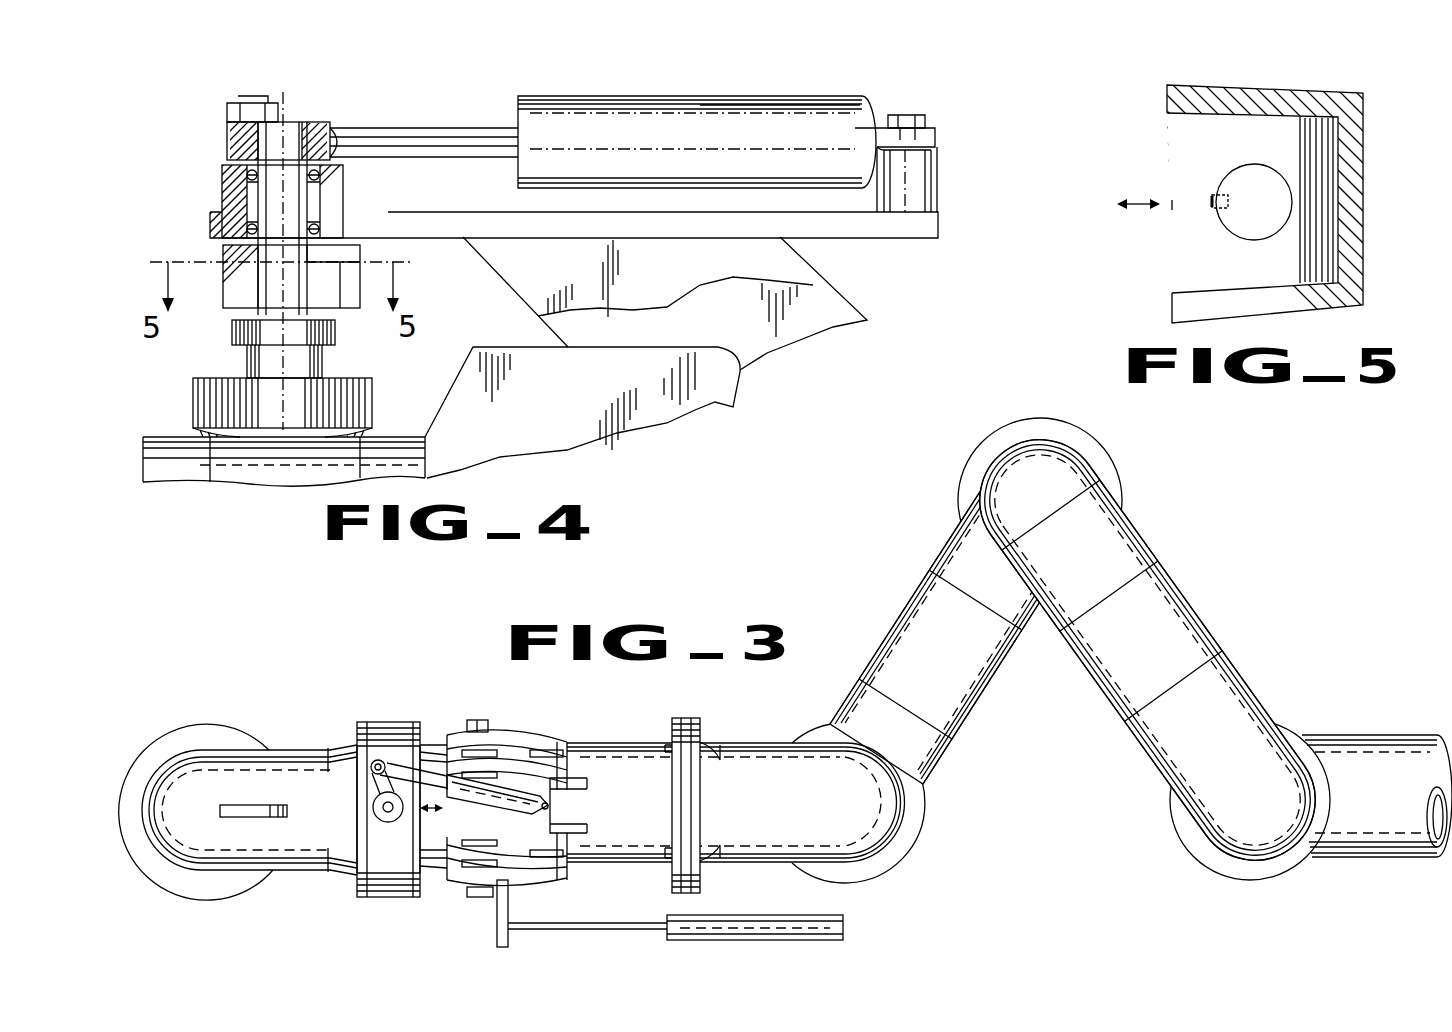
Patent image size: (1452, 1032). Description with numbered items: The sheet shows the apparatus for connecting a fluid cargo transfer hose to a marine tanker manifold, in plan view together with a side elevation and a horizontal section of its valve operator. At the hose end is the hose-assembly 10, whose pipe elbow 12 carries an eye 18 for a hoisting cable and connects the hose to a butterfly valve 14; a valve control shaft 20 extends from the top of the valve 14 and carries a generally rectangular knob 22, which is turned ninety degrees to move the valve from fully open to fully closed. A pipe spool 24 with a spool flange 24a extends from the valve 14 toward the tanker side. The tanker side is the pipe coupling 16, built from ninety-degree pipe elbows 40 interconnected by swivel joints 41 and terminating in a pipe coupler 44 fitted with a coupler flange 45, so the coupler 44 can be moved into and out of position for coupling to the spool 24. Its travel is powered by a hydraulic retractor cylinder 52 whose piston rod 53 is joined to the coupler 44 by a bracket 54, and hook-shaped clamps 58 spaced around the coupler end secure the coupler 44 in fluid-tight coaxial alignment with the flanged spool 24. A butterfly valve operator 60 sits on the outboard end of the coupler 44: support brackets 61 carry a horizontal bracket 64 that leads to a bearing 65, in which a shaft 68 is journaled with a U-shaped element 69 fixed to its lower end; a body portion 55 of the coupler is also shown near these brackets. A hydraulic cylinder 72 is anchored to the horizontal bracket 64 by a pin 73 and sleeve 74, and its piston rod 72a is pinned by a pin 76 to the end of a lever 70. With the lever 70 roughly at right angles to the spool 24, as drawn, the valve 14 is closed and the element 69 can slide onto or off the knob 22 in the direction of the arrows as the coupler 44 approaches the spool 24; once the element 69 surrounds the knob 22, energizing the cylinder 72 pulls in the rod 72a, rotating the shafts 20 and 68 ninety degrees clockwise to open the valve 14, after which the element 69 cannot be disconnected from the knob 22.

In FIG. 3, the hose-assembly 10 is at (209, 733).
In FIG. 3, the pipe elbow 12 is at (222, 789).
In FIG. 4, the butterfly valve 14 is at (172, 436).
In FIG. 3, the butterfly valve 14 is at (350, 891).
In FIG. 3, the pipe coupling 16 is at (1196, 575).
In FIG. 3, the eye 18 is at (250, 820).
In FIG. 4, the valve control shaft 20 is at (247, 316).
In FIG. 5, the valve control shaft 20 is at (1272, 207).
In FIG. 4, the knob 22 is at (330, 305).
In FIG. 5, the knob 22 is at (1270, 274).
In FIG. 3, the pipe spool 24 is at (437, 750).
In FIG. 3, the spool flange 24a is at (472, 720).
In FIG. 3, the pipe elbows 40 is at (955, 543).
In FIG. 3, the swivel joints 41 is at (960, 480).
In FIG. 3, the pipe coupler 44 is at (641, 786).
In FIG. 3, the coupler flange 45 is at (485, 722).
In FIG. 3, the hydraulic retractor cylinder 52 is at (753, 918).
In FIG. 3, the piston rod 53 is at (585, 927).
In FIG. 3, the bracket 54 is at (497, 923).
In FIG. 4, the base block 55 is at (567, 410).
In FIG. 3, the hook-shaped clamps 58 is at (516, 757).
In FIG. 4, the butterfly valve operator 60 is at (813, 86).
In FIG. 4, the support brackets 61 is at (823, 297).
In FIG. 3, the support brackets 61 is at (587, 788).
In FIG. 4, the horizontal bracket 64 is at (433, 216).
In FIG. 3, the horizontal bracket 64 is at (378, 832).
In FIG. 4, the bearing 65 is at (222, 176).
In FIG. 4, the shaft 68 is at (286, 122).
In FIG. 3, the shaft 68 is at (383, 806).
In FIG. 4, the U-shaped element 69 is at (223, 252).
In FIG. 5, the U-shaped element 69 is at (1277, 90).
In FIG. 4, the lever 70 is at (227, 130).
In FIG. 3, the lever 70 is at (375, 789).
In FIG. 4, the hydraulic cylinder 72 is at (710, 97).
In FIG. 3, the hydraulic cylinder 72 is at (488, 806).
In FIG. 4, the piston rod 72a is at (418, 130).
In FIG. 3, the piston rod 72a is at (403, 765).
In FIG. 4, the pin 73 is at (925, 118).
In FIG. 3, the pin 73 is at (549, 807).
In FIG. 4, the sleeve 74 is at (937, 168).
In FIG. 4, the pin 76 is at (245, 99).
In FIG. 3, the pin 76 is at (370, 762).